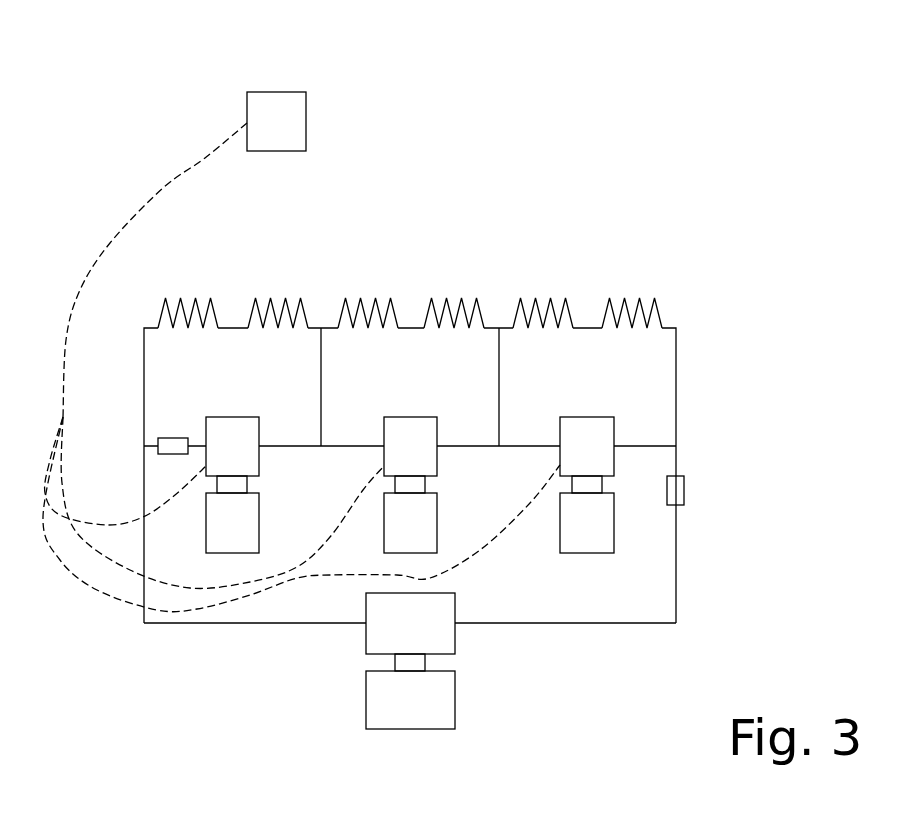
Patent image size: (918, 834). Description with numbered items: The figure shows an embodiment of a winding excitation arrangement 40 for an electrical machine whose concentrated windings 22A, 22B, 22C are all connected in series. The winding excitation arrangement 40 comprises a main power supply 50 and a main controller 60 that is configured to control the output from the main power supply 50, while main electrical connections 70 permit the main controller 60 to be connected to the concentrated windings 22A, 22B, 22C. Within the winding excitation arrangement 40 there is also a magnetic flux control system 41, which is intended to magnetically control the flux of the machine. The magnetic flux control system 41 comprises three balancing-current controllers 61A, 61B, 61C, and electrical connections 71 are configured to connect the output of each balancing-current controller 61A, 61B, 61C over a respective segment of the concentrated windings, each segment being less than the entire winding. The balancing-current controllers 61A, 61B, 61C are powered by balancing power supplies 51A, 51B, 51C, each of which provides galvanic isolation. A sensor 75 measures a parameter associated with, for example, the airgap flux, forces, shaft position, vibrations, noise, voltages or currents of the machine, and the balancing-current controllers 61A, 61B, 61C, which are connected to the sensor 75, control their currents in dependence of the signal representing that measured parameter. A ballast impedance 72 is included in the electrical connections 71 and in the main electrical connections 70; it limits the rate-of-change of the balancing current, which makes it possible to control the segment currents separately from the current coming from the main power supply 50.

The winding excitation arrangement 40 is at (512, 162).
The magnetic flux control system 41 is at (712, 436).
The concentrated winding 22A is at (368, 296).
The concentrated winding 22B is at (188, 296).
The concentrated winding 22C is at (536, 296).
The main power supply 50 is at (412, 712).
The balancing power supply 51A is at (437, 527).
The balancing power supply 51B is at (258, 530).
The balancing power supply 51C is at (572, 545).
The main controller 60 is at (455, 642).
The balancing-current controller 61A is at (437, 463).
The balancing-current controller 61B is at (260, 462).
The balancing-current controller 61C is at (615, 467).
The main electrical connections 70 is at (277, 623).
The electrical connections 71 is at (285, 445).
The ballast impedance 72 is at (177, 443).
The sensor 75 is at (287, 137).